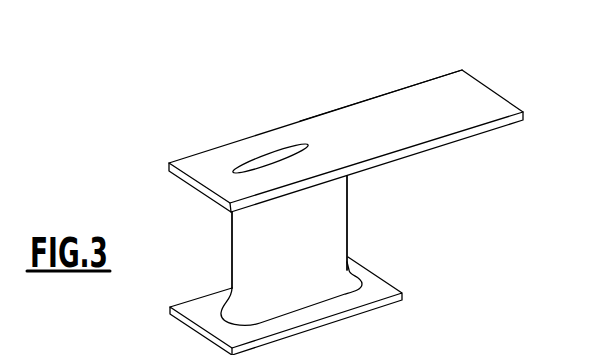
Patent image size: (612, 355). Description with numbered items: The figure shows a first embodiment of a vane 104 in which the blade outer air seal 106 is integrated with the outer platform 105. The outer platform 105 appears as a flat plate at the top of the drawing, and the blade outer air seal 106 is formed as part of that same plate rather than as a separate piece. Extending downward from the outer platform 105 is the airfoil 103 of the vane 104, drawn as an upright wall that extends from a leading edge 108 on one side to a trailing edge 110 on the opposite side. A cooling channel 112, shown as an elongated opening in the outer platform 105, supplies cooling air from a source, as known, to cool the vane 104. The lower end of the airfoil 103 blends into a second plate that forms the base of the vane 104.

The airfoil 103 is at (332, 192).
The vane 104 is at (252, 267).
The outer platform 105 is at (200, 153).
The blade outer air seal 106 is at (417, 110).
The leading edge 108 is at (232, 230).
The trailing edge 110 is at (347, 203).
The cooling channel 112 is at (263, 158).